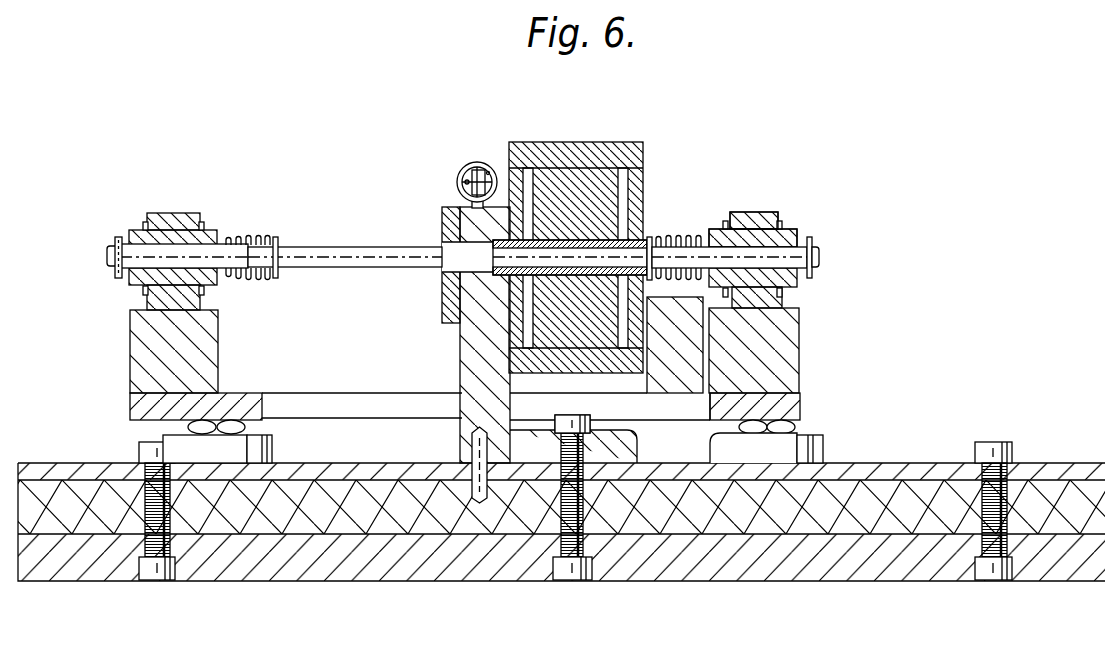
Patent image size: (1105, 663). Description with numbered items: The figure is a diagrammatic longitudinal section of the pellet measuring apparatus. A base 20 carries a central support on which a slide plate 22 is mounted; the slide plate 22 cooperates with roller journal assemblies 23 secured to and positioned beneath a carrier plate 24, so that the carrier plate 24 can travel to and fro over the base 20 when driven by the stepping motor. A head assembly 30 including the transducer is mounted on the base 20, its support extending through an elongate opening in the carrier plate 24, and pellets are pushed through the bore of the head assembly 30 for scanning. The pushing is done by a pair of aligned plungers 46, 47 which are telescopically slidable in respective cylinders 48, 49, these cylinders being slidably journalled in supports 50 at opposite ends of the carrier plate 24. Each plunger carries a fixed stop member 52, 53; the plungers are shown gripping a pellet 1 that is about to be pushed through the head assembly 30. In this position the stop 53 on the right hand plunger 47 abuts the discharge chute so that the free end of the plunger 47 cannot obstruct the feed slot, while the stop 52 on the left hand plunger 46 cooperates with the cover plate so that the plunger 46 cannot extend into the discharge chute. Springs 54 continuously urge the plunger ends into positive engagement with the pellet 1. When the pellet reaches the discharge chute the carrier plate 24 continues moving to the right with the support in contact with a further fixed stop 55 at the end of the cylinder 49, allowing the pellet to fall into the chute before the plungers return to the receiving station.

The pellet 1 is at (473, 257).
The base 20 is at (59, 568).
The slide plate 22 is at (47, 462).
The roller journal assemblies 23 is at (815, 445).
The carrier plate 24 is at (792, 402).
The head assembly 30 is at (576, 142).
The left hand plunger 46 is at (364, 256).
The right hand plunger 47 is at (667, 250).
The cylinder 48 is at (222, 253).
The cylinder 49 is at (758, 252).
The supports 50 is at (143, 292).
The stop member 52 is at (276, 242).
The stop member 53 is at (651, 238).
The springs 54 is at (251, 273).
The fixed stop 55 is at (808, 240).